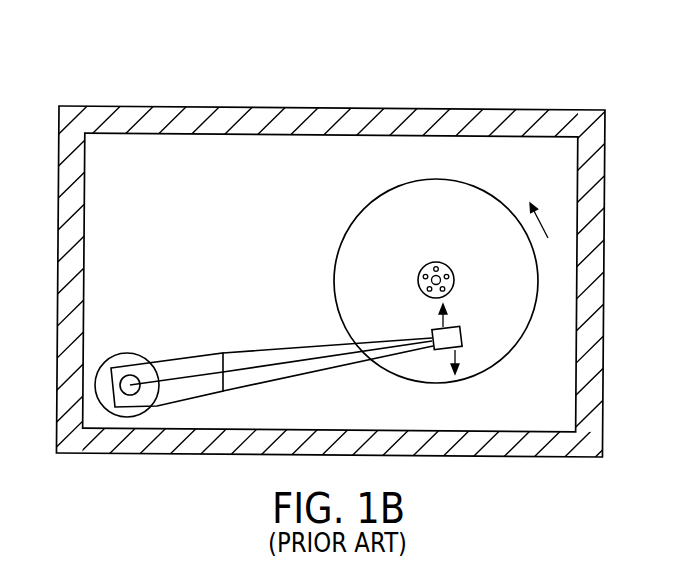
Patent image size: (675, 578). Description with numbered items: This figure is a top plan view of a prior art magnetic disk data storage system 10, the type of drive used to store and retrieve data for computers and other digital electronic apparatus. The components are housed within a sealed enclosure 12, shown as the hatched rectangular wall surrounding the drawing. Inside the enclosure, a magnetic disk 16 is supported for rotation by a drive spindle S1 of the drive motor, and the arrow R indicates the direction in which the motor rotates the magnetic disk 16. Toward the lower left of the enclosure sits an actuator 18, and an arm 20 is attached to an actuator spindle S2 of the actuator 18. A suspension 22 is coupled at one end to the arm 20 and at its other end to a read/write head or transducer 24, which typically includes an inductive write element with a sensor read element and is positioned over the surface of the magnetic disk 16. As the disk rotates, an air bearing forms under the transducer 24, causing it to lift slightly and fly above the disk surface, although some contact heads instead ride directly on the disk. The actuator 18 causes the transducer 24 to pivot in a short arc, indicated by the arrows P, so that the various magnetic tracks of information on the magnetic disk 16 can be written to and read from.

The magnetic disk data storage system 10 is at (388, 84).
The sealed enclosure 12 is at (225, 443).
The magnetic disk 16 is at (368, 225).
The drive spindle S1 is at (445, 268).
The arrow R is at (540, 210).
The actuator 18 is at (122, 358).
The actuator spindle S2 is at (137, 382).
The arm 20 is at (188, 367).
The suspension 22 is at (275, 372).
The transducer 24 is at (461, 337).
The arrows P is at (456, 338).